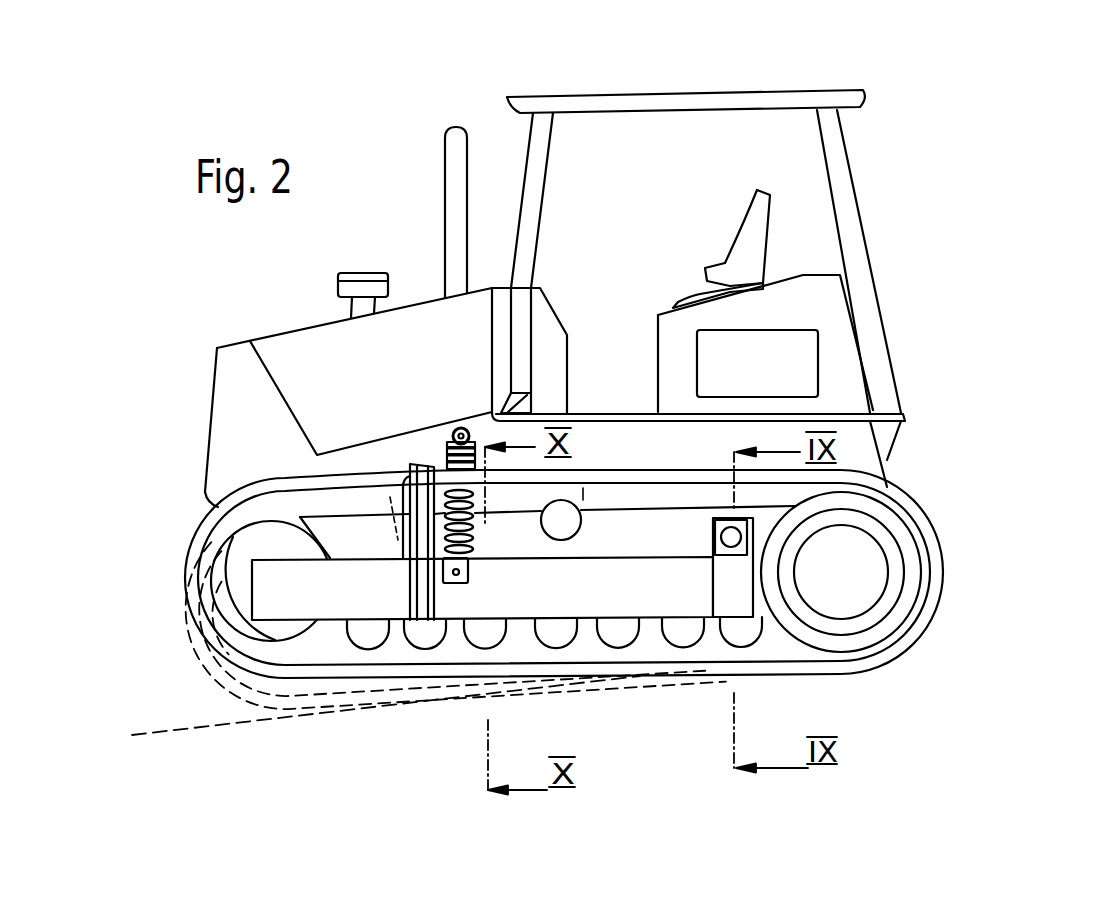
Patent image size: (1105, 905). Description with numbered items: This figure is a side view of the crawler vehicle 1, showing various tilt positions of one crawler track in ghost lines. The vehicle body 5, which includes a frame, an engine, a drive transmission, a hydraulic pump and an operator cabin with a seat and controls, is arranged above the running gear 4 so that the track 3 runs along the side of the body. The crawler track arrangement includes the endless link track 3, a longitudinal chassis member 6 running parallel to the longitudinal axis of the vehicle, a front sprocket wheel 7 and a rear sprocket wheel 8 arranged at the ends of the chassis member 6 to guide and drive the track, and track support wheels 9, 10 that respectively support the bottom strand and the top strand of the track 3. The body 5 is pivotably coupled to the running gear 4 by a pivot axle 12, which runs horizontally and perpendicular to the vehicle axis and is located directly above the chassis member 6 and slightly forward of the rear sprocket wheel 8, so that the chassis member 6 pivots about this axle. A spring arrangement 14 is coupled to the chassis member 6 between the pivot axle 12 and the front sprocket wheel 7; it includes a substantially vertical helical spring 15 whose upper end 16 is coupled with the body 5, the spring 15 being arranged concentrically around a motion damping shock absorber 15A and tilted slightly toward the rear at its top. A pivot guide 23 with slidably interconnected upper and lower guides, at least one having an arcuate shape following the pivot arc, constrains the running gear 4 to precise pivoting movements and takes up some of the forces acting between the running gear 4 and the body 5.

The crawler vehicle 1 is at (1001, 204).
The track 3 is at (920, 508).
The running gear 4 is at (320, 622).
The vehicle body 5 is at (874, 234).
The chassis member 6 is at (650, 600).
The front sprocket wheel 7 is at (265, 543).
The rear sprocket wheel 8 is at (900, 597).
The track support wheel 9 is at (483, 637).
The track support wheel 10 is at (566, 517).
The pivot axle 12 is at (727, 555).
The spring arrangement 14 is at (480, 532).
The helical spring 15 is at (473, 500).
The shock absorber 15A is at (443, 450).
The upper end of the helical spring 16 is at (475, 445).
The pivot guide 23 is at (410, 477).